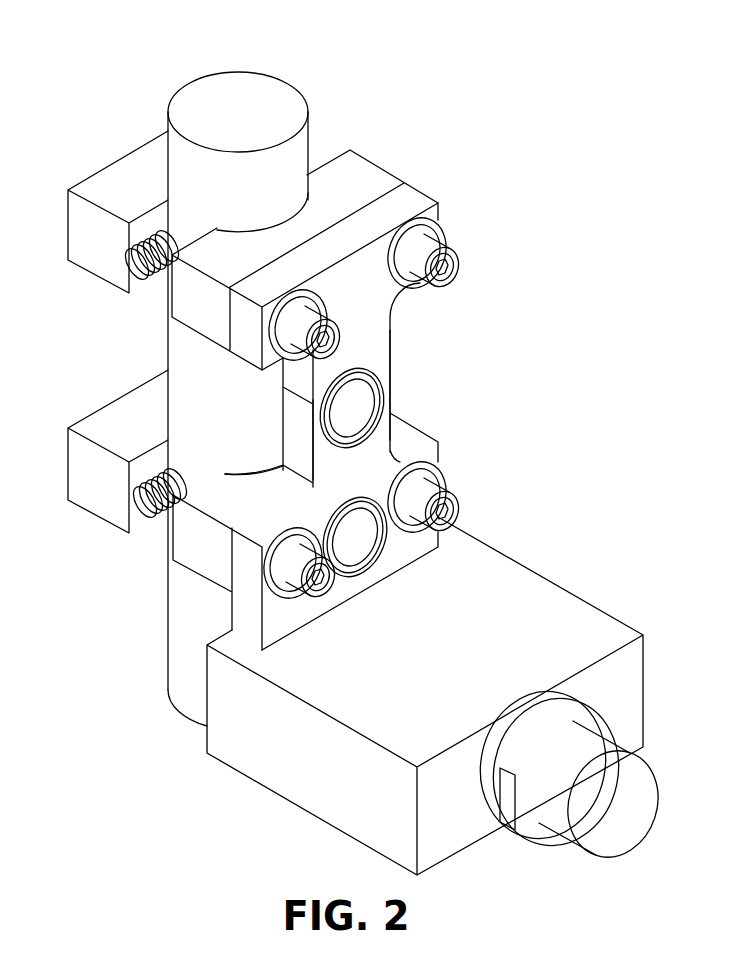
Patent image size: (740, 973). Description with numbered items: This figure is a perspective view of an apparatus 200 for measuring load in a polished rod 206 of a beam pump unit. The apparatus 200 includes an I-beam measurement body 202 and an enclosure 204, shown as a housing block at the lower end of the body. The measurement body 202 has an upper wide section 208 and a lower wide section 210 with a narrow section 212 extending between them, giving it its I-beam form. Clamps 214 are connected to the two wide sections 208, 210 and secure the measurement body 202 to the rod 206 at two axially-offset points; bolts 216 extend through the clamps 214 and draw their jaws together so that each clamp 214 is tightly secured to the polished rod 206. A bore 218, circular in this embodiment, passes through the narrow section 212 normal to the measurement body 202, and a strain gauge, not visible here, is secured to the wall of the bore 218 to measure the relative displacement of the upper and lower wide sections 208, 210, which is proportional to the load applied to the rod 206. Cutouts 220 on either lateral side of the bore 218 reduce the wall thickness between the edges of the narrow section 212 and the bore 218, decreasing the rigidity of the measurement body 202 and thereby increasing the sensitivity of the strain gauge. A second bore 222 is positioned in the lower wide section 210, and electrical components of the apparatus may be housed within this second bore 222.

The apparatus 200 is at (96, 25).
The I-beam measurement body 202 is at (411, 204).
The enclosure 204 is at (545, 591).
The polished rod 206 is at (238, 111).
The upper wide section 208 is at (368, 284).
The lower wide section 210 is at (445, 512).
The narrow section 212 is at (375, 362).
The clamps 214 is at (357, 162).
The bolts 216 is at (160, 278).
The bore 218 is at (352, 407).
The cutouts 220 is at (307, 423).
The second bore 222 is at (343, 541).